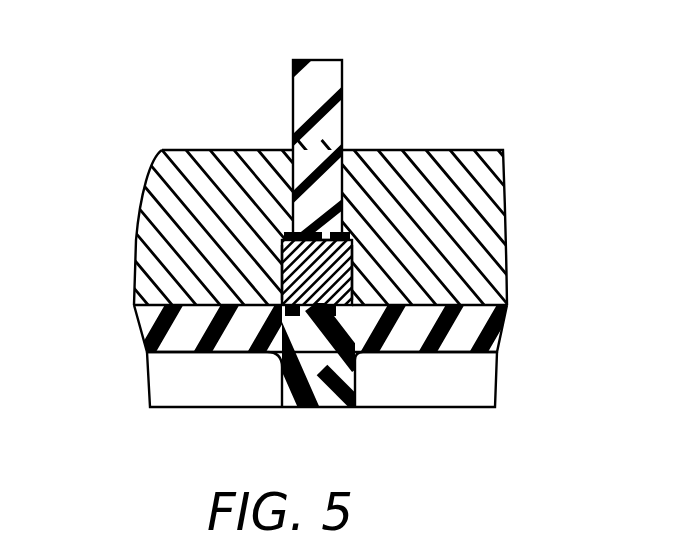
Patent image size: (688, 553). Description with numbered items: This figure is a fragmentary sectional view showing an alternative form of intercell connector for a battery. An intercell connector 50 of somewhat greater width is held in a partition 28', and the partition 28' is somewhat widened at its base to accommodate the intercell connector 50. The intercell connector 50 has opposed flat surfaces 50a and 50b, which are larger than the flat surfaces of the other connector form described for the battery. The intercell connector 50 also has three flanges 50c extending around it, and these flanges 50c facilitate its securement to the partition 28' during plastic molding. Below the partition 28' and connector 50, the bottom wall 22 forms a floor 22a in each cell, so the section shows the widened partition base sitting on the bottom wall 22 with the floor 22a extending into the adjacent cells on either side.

The partition 28' is at (377, 136).
The intercell connector 50 is at (353, 305).
The flat surface 50a is at (280, 275).
The flat surface 50b is at (353, 275).
The flanges 50c is at (284, 240).
The floor 22a is at (458, 305).
The bottom wall 22 is at (217, 354).